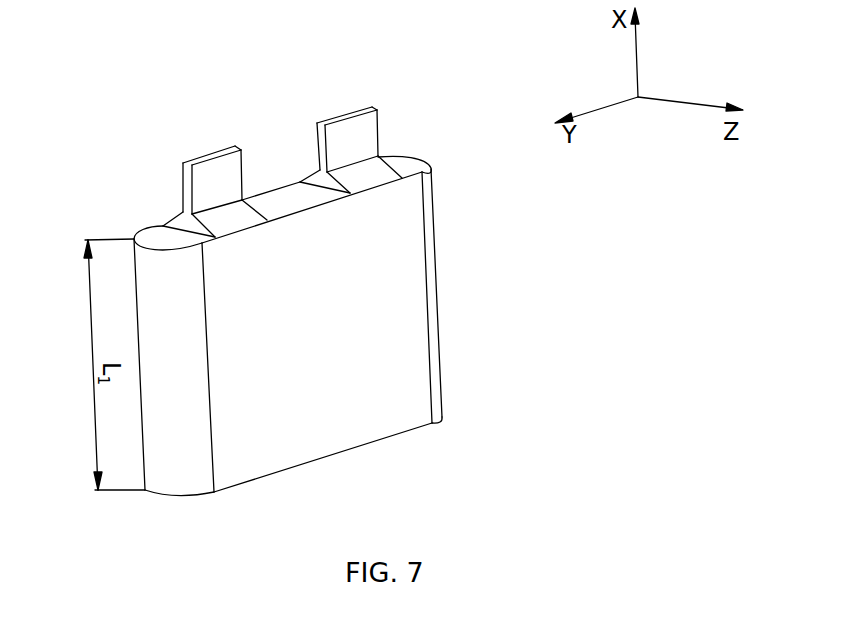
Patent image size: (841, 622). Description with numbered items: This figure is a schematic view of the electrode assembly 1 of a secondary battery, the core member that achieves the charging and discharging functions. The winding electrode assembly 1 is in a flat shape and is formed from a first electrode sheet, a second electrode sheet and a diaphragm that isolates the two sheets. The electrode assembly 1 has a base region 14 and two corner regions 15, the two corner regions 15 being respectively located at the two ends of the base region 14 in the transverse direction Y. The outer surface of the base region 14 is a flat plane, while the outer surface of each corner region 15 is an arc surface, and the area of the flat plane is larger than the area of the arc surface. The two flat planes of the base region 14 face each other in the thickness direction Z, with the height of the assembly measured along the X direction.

The electrode assembly 1 is at (270, 326).
The base region 14 is at (360, 423).
The corner region 15 is at (430, 290).